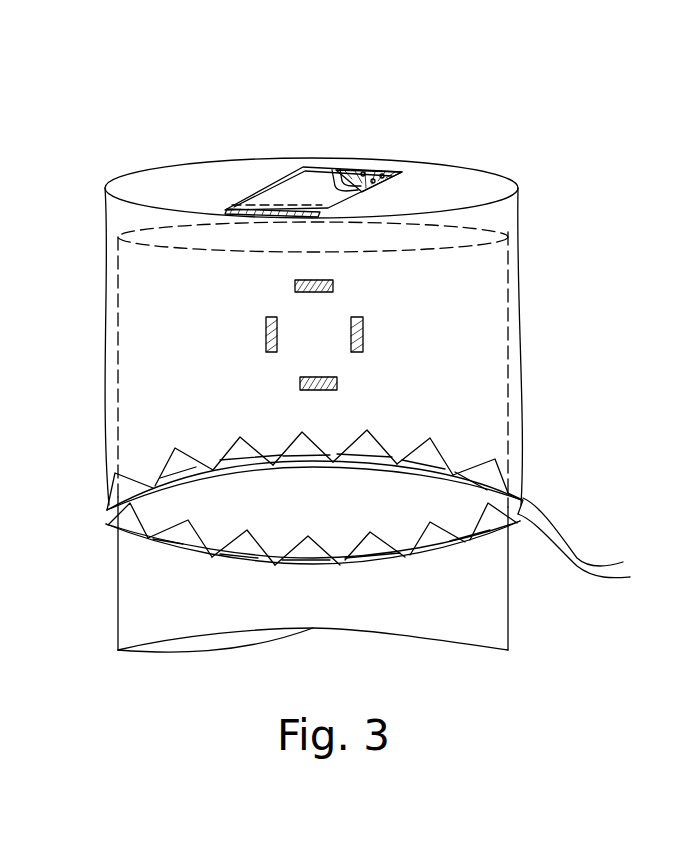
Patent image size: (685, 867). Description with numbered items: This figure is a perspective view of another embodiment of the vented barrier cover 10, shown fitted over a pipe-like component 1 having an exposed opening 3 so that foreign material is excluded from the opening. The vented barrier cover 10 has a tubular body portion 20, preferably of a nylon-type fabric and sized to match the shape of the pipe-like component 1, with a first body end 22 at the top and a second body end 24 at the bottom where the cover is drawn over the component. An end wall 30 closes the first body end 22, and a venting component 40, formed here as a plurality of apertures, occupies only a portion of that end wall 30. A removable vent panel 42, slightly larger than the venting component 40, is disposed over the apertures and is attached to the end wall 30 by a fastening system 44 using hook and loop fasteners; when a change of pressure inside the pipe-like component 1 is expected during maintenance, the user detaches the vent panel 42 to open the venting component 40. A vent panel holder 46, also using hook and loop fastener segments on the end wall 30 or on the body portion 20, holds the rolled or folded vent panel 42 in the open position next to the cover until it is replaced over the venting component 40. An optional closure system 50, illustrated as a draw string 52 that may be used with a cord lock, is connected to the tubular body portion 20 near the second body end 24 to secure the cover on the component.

The pipe-like component 1 is at (118, 582).
The exposed opening 3 is at (428, 235).
The vented barrier cover 10 is at (330, 292).
The tubular body portion 20 is at (103, 363).
The first body end 22 is at (574, 346).
The second body end 24 is at (286, 497).
The end wall 30 is at (463, 185).
The venting component 40 is at (363, 172).
The removable vent panel 42 is at (337, 169).
The fastening system 44 is at (356, 183).
The vent panel holder 46 is at (247, 215).
The closure system 50 is at (549, 480).
The draw string 52 is at (570, 563).